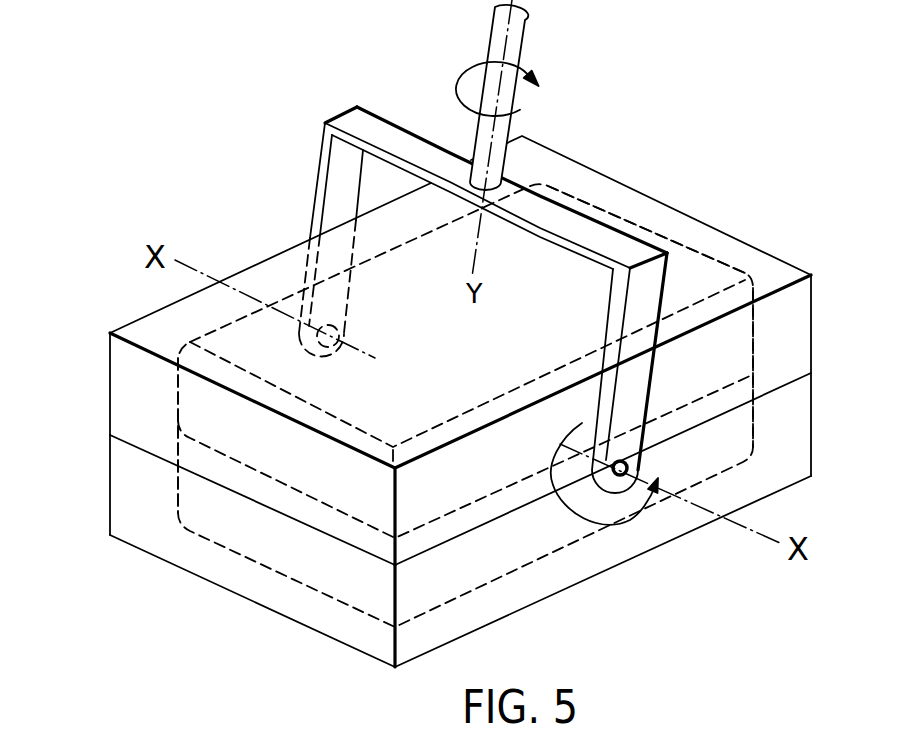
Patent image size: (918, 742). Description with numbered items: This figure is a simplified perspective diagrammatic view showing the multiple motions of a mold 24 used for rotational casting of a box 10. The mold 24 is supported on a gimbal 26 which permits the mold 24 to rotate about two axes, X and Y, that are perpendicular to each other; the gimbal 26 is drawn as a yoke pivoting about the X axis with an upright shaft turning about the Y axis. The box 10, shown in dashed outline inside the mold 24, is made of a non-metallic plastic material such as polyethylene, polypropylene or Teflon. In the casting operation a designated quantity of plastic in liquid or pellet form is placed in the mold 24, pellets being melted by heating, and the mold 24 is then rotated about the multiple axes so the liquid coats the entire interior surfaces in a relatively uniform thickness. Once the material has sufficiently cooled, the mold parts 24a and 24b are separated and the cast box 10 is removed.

The box 10 is at (597, 197).
The mold 24 is at (430, 401).
The mold part 24a is at (117, 358).
The mold part 24b is at (148, 530).
The gimbal 26 is at (312, 207).